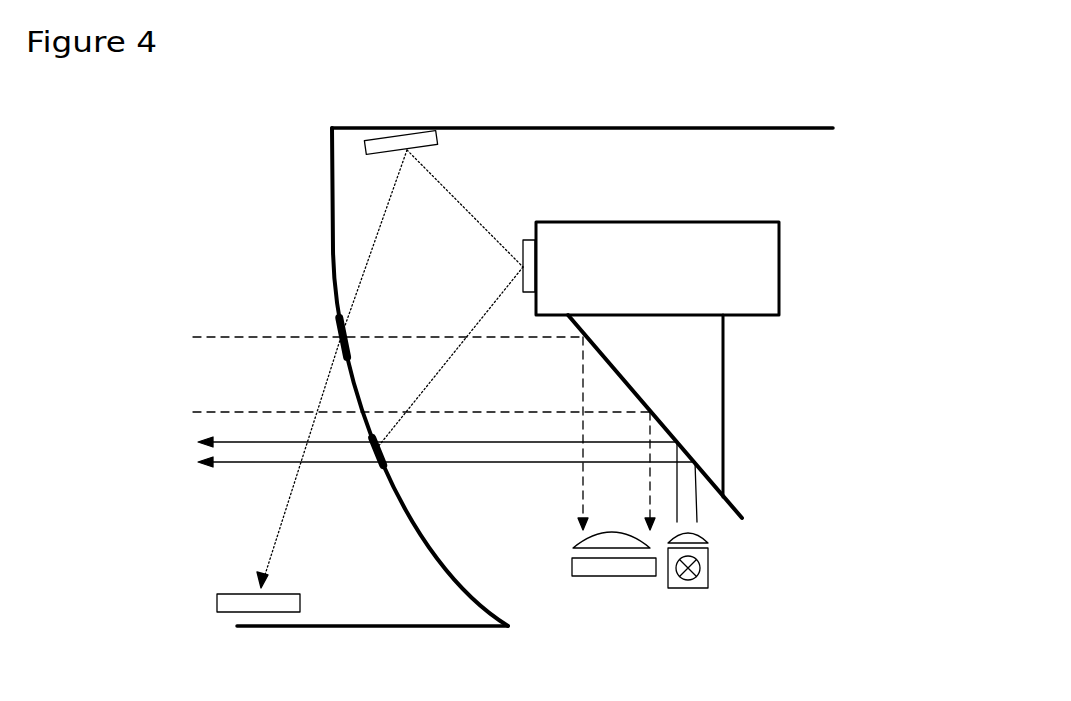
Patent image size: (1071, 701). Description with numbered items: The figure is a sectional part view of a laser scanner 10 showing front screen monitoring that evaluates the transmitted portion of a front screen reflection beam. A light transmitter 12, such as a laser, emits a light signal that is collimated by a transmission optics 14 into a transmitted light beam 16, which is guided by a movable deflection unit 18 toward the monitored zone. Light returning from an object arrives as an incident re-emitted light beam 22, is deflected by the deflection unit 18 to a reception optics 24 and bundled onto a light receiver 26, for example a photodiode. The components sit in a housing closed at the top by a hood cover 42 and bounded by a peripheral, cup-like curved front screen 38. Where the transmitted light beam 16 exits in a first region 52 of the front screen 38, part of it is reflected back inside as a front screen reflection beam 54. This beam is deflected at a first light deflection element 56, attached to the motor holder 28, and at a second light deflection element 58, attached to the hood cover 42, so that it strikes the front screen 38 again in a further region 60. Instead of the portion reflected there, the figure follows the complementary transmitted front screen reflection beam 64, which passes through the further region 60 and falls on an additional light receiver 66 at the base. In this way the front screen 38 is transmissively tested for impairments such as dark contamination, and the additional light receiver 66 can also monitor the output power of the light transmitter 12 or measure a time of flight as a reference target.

The laser scanner 10 is at (848, 77).
The light transmitter 12 is at (695, 583).
The transmission optics 14 is at (708, 537).
The transmitted light beam 16 is at (273, 450).
The deflection unit 18 is at (677, 433).
The incident re-emitted light beam 22 is at (218, 375).
The reception optics 24 is at (577, 547).
The light receiver 26 is at (612, 576).
The motor holder 28 is at (752, 270).
The front screen 38 is at (328, 185).
The hood cover 42 is at (790, 130).
The first region 52 is at (383, 463).
The front screen reflection beam 54 is at (482, 307).
The first light deflection element 56 is at (518, 240).
The second light deflection element 58 is at (402, 148).
The further region 60 is at (335, 330).
The transmitted front screen reflection beam 64 is at (282, 525).
The additional light receiver 66 is at (230, 603).